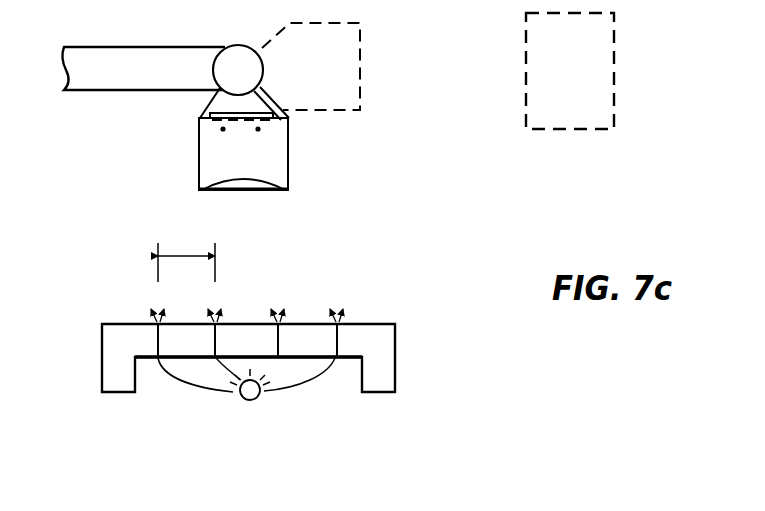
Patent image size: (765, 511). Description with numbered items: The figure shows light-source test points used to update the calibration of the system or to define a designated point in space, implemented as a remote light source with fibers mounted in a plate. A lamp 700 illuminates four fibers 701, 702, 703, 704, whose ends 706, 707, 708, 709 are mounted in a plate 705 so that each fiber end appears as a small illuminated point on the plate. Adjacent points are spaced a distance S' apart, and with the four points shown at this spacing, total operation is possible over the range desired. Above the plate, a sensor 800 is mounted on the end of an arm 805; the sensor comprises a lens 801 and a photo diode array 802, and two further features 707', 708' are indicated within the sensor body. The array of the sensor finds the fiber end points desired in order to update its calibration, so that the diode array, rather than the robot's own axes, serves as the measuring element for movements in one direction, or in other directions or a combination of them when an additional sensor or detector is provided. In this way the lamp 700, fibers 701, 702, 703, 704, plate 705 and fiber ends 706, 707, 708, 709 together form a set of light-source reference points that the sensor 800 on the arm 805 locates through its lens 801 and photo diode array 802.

The lamp 700 is at (250, 400).
The fiber 701 is at (189, 379).
The fiber 702 is at (216, 358).
The fiber 703 is at (260, 381).
The fiber 704 is at (322, 374).
The plate 705 is at (395, 324).
The fiber end 706 is at (161, 321).
The fiber end 707 is at (244, 311).
The fiber end 708 is at (310, 311).
The fiber end 709 is at (342, 320).
The photodetector 707' is at (306, 141).
The photodetector 708' is at (177, 135).
The sensor 800 is at (199, 156).
The lens 801 is at (205, 192).
The photo diode array 802 is at (284, 109).
The arm 805 is at (165, 82).
The spacing S' is at (186, 258).